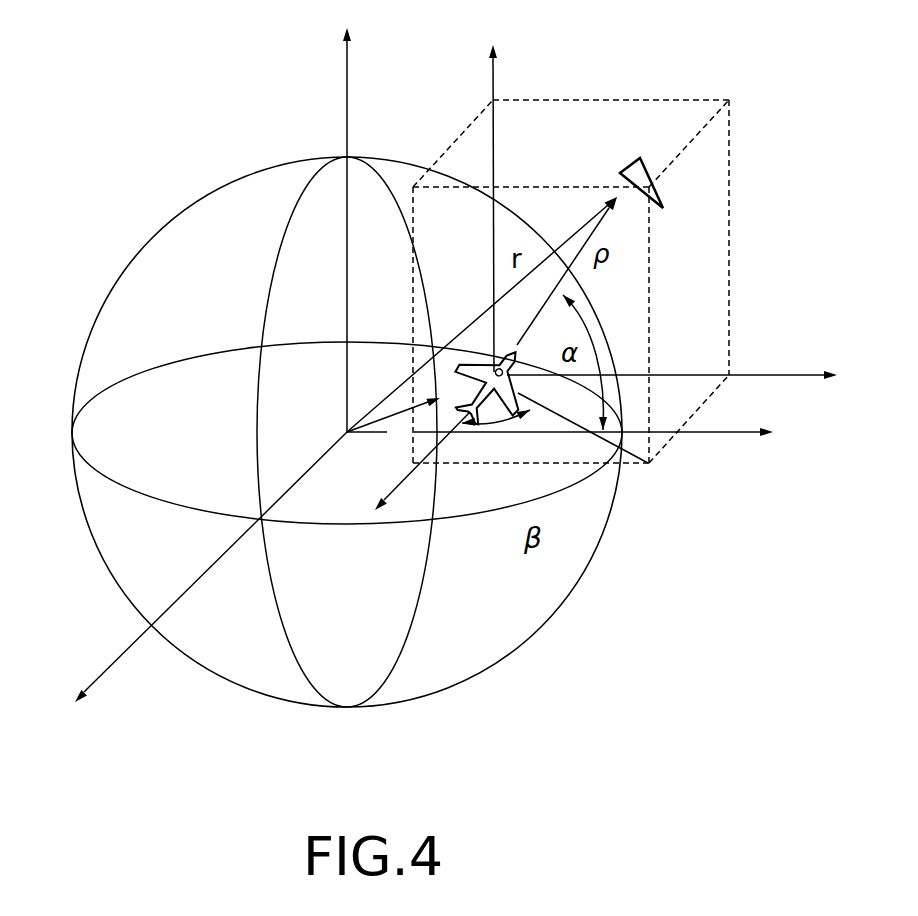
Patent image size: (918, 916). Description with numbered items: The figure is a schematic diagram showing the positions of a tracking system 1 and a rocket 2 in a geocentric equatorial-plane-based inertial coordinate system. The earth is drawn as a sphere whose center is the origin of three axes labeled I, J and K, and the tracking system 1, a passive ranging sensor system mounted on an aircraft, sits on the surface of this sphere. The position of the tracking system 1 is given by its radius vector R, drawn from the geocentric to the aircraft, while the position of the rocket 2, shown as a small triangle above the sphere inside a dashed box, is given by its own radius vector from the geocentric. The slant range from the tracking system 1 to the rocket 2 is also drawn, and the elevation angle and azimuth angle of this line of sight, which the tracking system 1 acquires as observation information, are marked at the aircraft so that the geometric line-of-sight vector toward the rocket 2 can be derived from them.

The tracking system 1 is at (498, 393).
The rocket 2 is at (661, 196).
The K axis K is at (363, 227).
The J axis J is at (560, 451).
The I axis I is at (211, 583).
The radius vector of the tracking system R is at (393, 425).